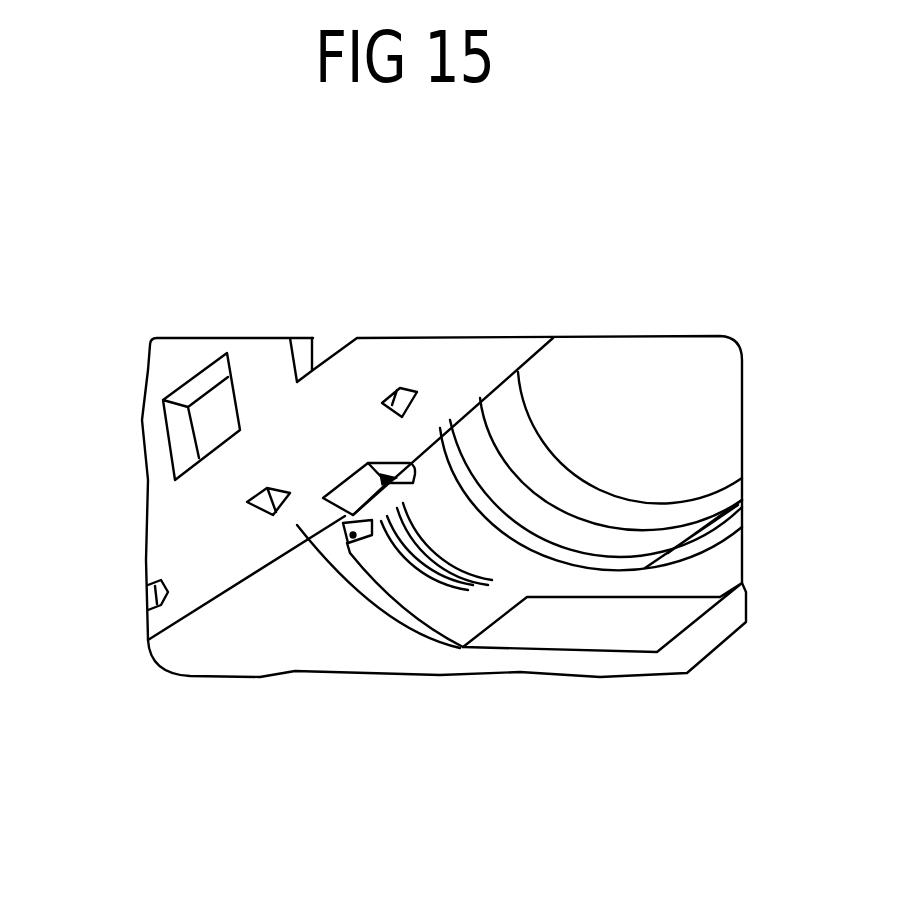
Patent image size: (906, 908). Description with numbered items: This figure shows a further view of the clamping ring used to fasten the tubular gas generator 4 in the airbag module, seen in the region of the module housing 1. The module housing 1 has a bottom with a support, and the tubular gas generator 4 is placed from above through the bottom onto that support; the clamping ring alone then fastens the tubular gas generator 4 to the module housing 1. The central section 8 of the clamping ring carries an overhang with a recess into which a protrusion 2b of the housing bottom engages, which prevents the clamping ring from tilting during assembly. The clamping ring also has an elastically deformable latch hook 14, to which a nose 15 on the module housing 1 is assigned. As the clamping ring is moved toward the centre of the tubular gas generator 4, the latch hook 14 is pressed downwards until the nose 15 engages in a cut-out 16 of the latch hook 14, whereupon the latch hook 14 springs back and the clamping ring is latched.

The module housing 1 is at (166, 368).
The tubular gas generator 4 is at (694, 430).
The protrusion 2b is at (382, 480).
The central section 8 is at (408, 598).
The latch hook 14 is at (355, 523).
The nose 15 is at (297, 528).
The cut-out 16 is at (343, 523).